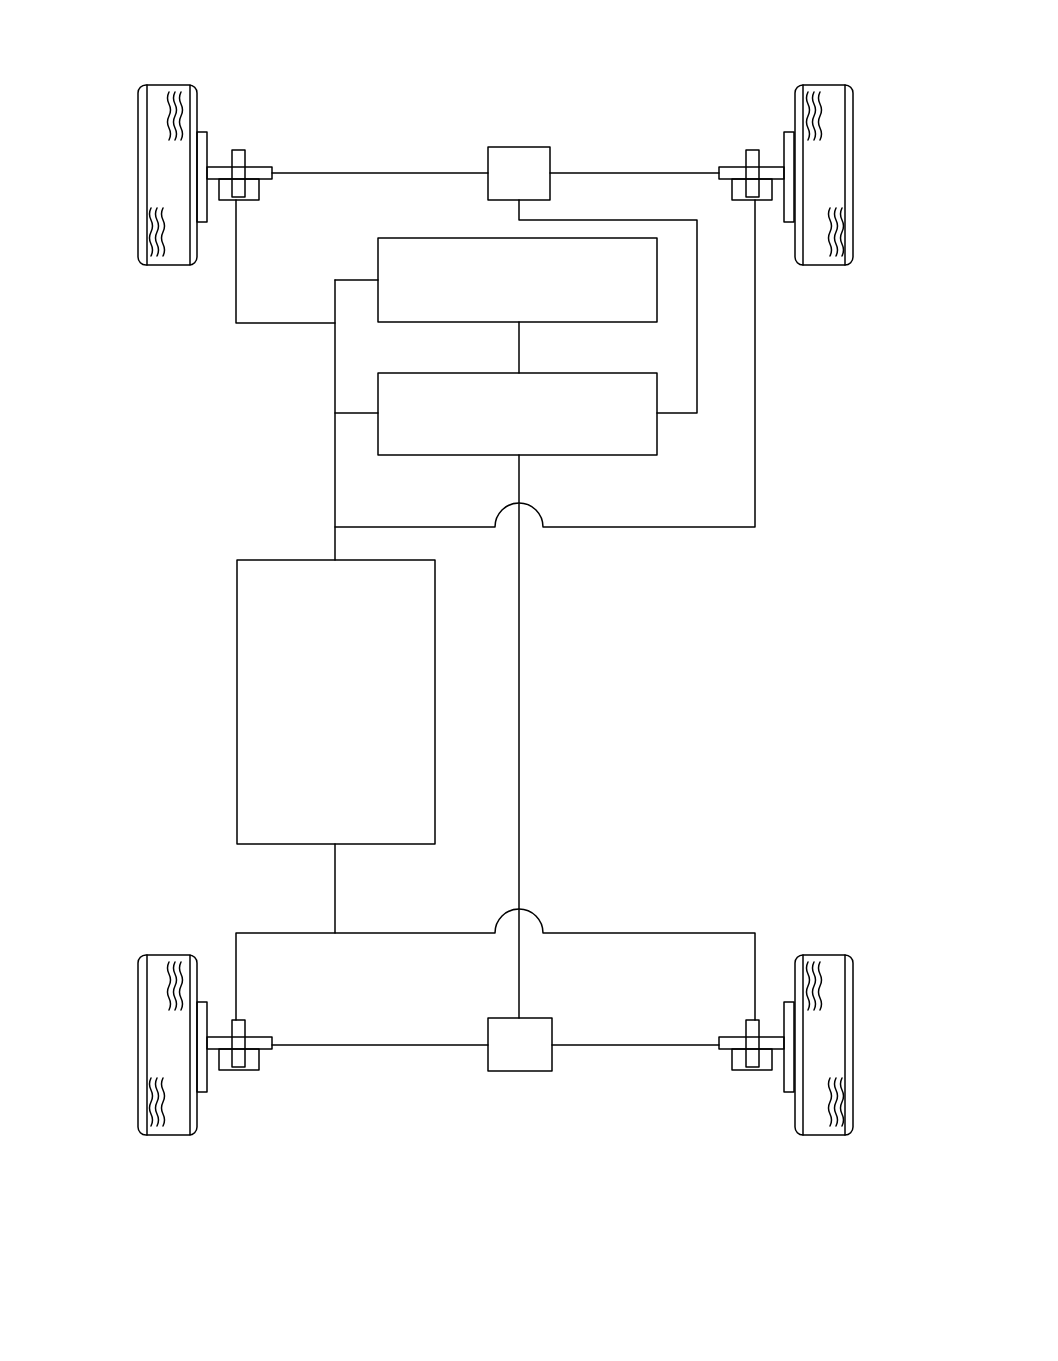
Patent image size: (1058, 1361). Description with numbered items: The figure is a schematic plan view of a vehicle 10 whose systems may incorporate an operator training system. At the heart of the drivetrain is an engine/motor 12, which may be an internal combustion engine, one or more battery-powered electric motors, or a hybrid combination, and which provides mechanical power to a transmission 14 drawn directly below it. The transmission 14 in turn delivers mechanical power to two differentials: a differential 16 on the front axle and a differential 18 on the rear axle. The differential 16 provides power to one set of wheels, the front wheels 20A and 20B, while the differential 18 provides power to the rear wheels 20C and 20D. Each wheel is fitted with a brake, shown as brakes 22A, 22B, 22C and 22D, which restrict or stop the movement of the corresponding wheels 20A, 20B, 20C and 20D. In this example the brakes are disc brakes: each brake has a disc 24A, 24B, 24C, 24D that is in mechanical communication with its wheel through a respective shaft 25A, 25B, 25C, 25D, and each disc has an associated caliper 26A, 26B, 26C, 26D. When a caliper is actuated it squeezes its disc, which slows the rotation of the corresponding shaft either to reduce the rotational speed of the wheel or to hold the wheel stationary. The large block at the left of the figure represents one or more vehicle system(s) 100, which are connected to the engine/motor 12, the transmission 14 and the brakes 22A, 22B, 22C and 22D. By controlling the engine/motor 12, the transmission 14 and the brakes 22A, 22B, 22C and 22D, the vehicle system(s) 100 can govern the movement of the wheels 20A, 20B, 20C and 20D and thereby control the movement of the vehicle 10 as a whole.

The vehicle 10 is at (886, 76).
The engine/motor 12 is at (378, 258).
The transmission 14 is at (603, 456).
The differential 16 is at (520, 165).
The differential 18 is at (520, 1058).
The wheel 20A is at (157, 188).
The wheel 20B is at (848, 200).
The wheel 20C is at (157, 1045).
The wheel 20D is at (848, 1053).
The brake 22A is at (265, 144).
The brake 22B is at (779, 144).
The brake 22C is at (267, 1080).
The brake 22D is at (779, 1080).
The disc 24A is at (237, 201).
The disc 24B is at (756, 201).
The disc 24C is at (246, 1032).
The disc 24D is at (746, 1032).
The shaft 25A is at (209, 170).
The shaft 25B is at (783, 170).
The shaft 25C is at (221, 1038).
The shaft 25D is at (771, 1038).
The caliper 26A is at (260, 194).
The caliper 26B is at (732, 195).
The caliper 26C is at (260, 1062).
The caliper 26D is at (732, 1060).
The vehicle system(s) 100 is at (237, 691).